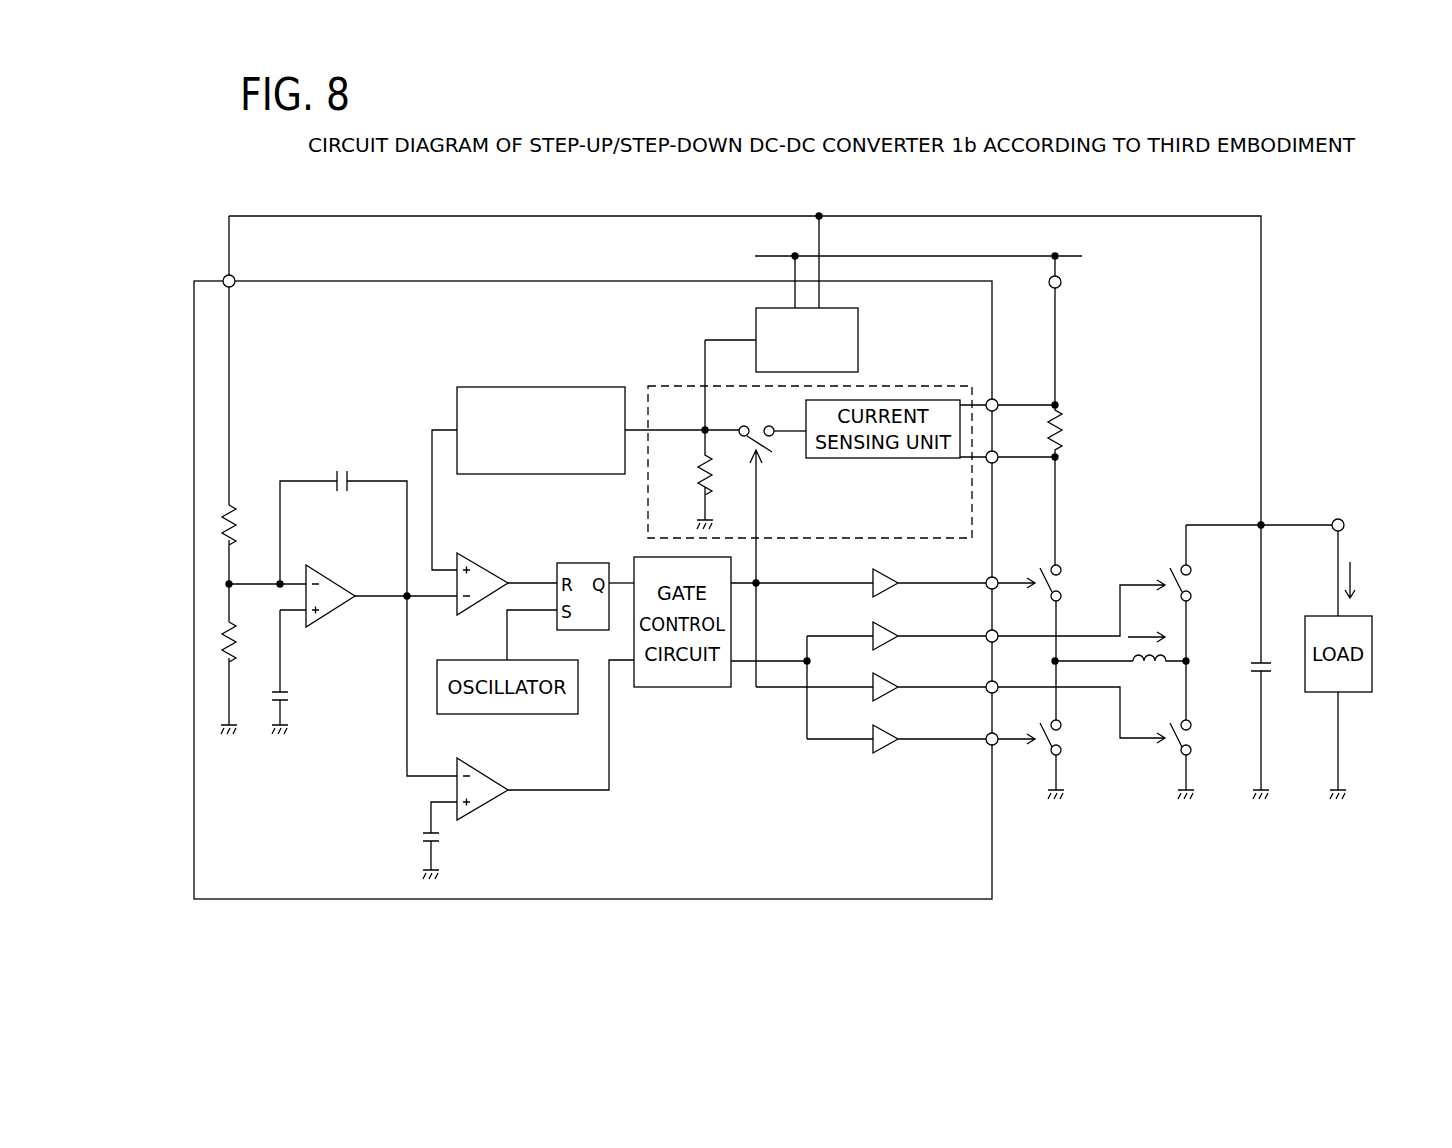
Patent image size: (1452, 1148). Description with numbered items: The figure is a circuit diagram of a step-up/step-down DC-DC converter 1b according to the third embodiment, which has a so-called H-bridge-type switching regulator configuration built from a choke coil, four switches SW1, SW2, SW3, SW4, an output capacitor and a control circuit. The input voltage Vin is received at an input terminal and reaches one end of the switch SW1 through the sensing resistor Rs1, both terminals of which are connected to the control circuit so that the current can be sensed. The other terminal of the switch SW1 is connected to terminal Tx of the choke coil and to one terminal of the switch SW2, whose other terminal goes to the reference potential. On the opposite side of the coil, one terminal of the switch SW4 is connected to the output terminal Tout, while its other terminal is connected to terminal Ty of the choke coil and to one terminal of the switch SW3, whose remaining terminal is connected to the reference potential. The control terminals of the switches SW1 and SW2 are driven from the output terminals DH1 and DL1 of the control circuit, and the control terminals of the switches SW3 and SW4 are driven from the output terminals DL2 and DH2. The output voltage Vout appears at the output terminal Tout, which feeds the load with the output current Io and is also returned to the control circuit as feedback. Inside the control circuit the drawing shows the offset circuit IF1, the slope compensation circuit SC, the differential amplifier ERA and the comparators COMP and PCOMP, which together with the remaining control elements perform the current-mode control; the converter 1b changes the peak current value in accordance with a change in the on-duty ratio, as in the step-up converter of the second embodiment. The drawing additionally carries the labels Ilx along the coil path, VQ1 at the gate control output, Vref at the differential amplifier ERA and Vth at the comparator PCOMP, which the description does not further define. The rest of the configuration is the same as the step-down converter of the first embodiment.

The step-up/step-down DC-DC converter 1b is at (1293, 232).
The slope compensation circuit SC is at (472, 385).
The offset circuit IF1 is at (858, 318).
The differential amplifier ERA is at (323, 582).
The comparator COMP is at (475, 571).
The comparator PCOMP is at (477, 776).
The sensing resistor Rs1 is at (1076, 431).
The switch SW1 is at (1074, 583).
The switch SW2 is at (1074, 738).
The switch SW3 is at (1204, 738).
The switch SW4 is at (1204, 583).
The output terminal DH1 is at (1013, 573).
The output terminal DH2 is at (1075, 611).
The output terminal DL1 is at (1011, 755).
The output terminal DL2 is at (1075, 712).
The terminal Tx is at (1077, 665).
The terminal Ty is at (1199, 668).
The input voltage Vin is at (924, 245).
The output voltage Vout is at (1259, 513).
The output terminal Tout is at (1350, 514).
The output current Io is at (1360, 580).
The inductor current Ilx is at (1146, 626).
The gate control signal VQ1 is at (737, 720).
The reference voltage Vref is at (302, 672).
The threshold voltage Vth is at (425, 840).